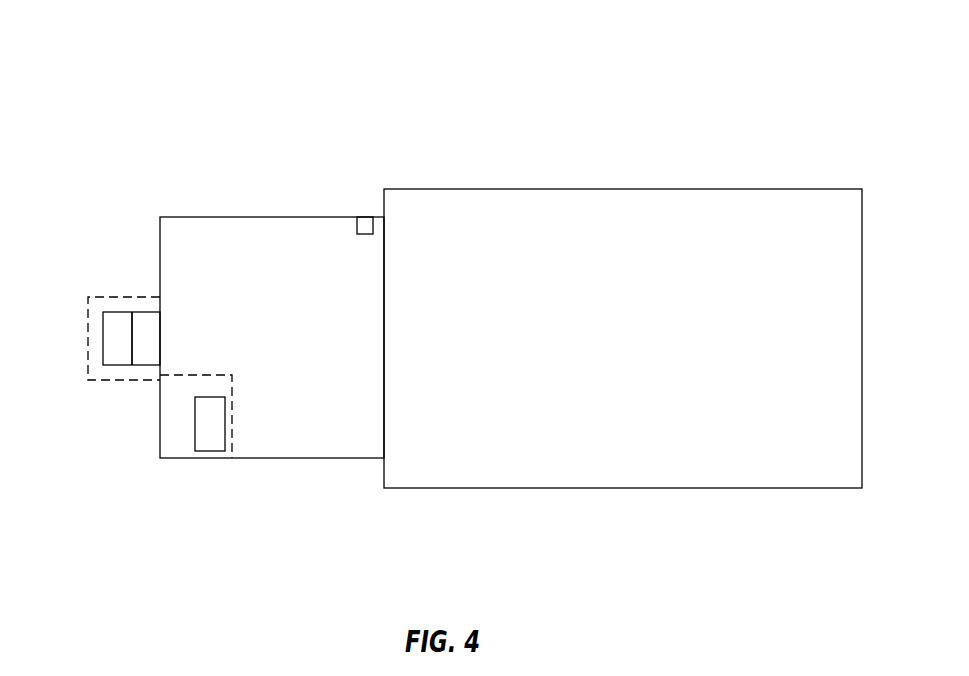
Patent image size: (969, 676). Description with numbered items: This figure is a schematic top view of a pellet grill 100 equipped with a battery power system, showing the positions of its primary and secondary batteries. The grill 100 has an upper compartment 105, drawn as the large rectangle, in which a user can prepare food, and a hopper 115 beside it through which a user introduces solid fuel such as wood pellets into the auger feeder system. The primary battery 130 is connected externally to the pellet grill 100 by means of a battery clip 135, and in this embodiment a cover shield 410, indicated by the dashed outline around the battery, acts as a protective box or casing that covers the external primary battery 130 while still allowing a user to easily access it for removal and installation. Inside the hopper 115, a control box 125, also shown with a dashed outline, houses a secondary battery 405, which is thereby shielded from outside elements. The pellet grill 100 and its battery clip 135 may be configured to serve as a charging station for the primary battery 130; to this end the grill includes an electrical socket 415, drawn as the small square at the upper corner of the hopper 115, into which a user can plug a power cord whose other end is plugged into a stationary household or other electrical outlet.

The pellet grill 100 is at (256, 86).
The upper compartment 105 is at (758, 189).
The hopper 115 is at (242, 217).
The control box 125 is at (232, 422).
The primary battery 130 is at (103, 345).
The battery clip 135 is at (145, 365).
The secondary battery 405 is at (210, 451).
The cover shield 410 is at (103, 297).
The electrical socket 415 is at (366, 226).